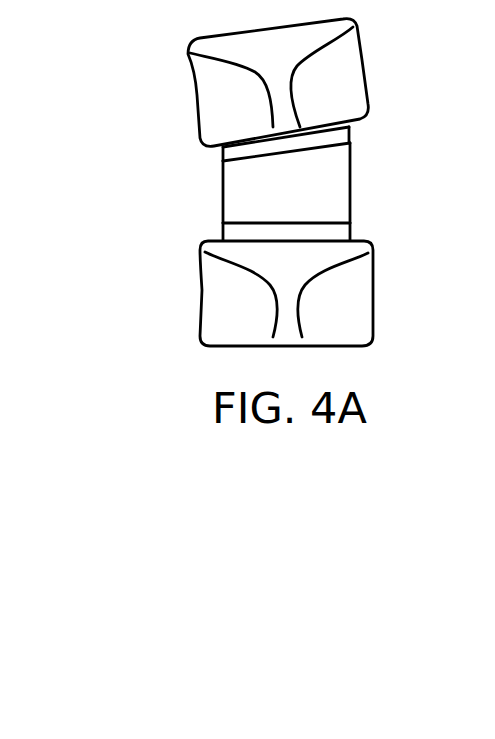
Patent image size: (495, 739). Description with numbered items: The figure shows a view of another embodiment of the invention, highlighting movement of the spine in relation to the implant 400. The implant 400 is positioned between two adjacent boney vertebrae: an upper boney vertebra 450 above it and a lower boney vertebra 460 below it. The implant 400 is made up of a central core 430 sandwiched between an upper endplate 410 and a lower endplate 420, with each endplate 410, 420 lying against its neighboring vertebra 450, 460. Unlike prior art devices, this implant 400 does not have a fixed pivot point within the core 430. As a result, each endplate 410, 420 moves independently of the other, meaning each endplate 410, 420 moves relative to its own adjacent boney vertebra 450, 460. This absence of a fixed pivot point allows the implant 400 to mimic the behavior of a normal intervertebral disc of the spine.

The implant 400 is at (282, 183).
The endplate 410 is at (222, 151).
The endplate 420 is at (222, 232).
The core 430 is at (307, 202).
The boney vertebra 450 is at (352, 58).
The boney vertebra 460 is at (358, 288).